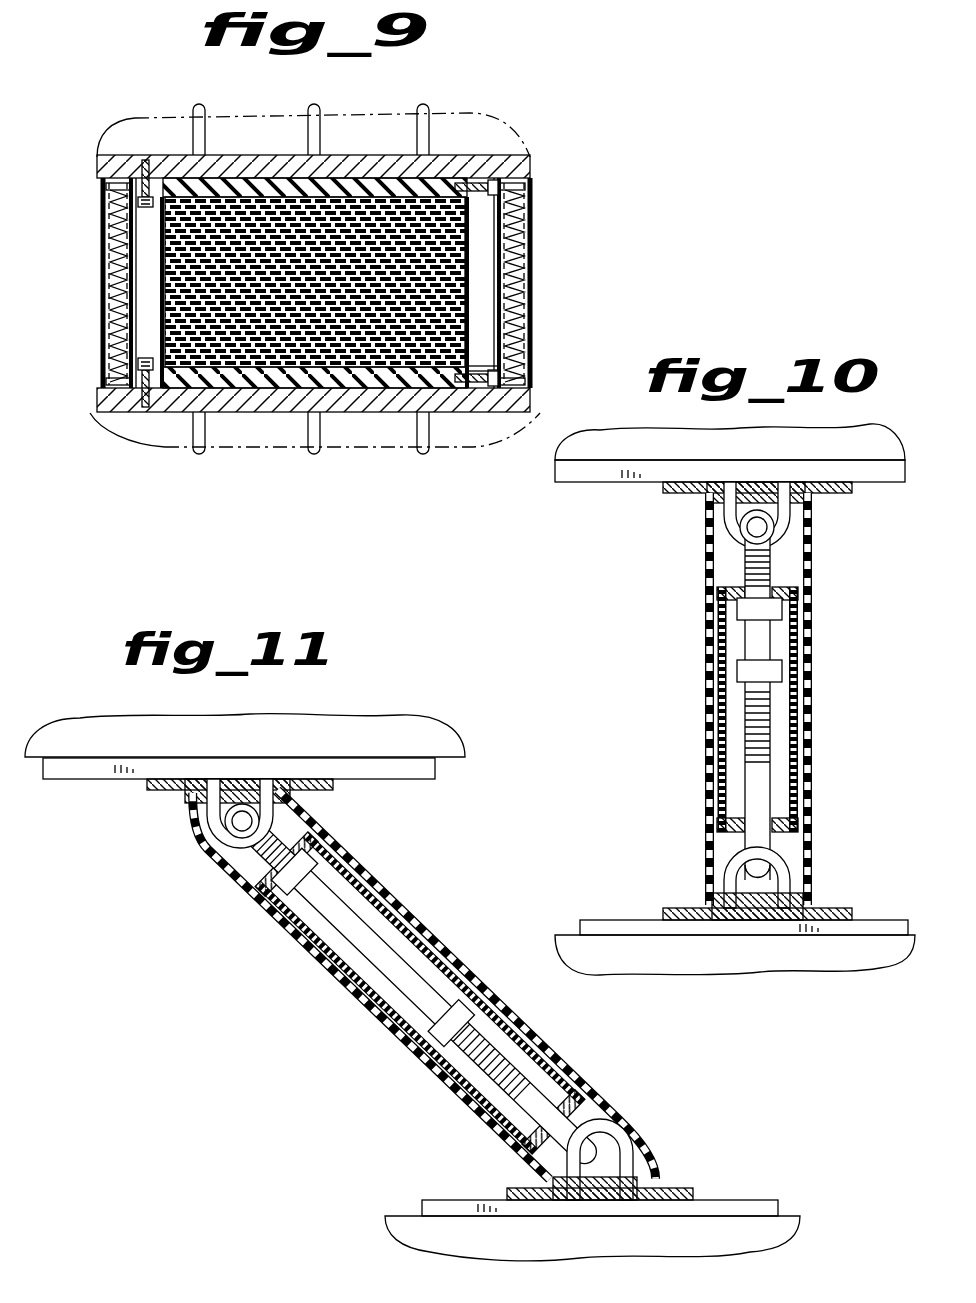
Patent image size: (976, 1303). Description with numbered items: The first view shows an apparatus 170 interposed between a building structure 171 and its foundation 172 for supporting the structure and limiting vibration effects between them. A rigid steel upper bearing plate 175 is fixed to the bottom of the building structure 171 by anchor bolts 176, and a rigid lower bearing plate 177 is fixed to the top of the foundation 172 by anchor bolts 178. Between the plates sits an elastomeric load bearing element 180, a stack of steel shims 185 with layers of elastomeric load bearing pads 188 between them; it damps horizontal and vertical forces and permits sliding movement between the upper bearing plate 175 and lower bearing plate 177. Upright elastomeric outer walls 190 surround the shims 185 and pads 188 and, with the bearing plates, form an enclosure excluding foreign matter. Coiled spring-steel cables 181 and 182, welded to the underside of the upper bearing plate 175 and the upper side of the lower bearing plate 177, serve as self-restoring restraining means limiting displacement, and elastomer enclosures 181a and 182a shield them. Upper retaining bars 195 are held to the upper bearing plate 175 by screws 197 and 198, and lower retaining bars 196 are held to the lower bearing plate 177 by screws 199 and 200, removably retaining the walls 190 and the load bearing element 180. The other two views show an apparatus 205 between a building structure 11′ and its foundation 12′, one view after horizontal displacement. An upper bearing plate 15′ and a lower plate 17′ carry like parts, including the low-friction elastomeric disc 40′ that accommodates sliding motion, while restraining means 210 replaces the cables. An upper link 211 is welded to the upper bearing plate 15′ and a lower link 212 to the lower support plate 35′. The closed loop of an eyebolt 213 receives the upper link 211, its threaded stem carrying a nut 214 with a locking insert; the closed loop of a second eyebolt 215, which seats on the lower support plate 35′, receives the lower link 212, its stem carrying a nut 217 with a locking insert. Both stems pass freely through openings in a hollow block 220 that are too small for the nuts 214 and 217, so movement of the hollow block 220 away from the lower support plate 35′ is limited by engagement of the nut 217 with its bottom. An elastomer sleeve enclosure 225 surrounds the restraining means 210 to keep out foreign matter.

In FIG. 9, the apparatus 170 is at (341, 287).
In FIG. 9, the building structure 171 is at (490, 108).
In FIG. 9, the foundation 172 is at (180, 447).
In FIG. 9, the upper bearing plate 175 is at (531, 170).
In FIG. 9, the anchor bolts 176 is at (205, 108).
In FIG. 9, the lower bearing plate 177 is at (100, 400).
In FIG. 9, the anchor bolts 178 is at (308, 452).
In FIG. 9, the elastomeric load bearing element 180 is at (476, 283).
In FIG. 9, the coiled cable 181 is at (103, 270).
In FIG. 9, the enclosure 181a is at (157, 298).
In FIG. 9, the coiled cable 182 is at (531, 246).
In FIG. 9, the enclosure 182a is at (531, 226).
In FIG. 9, the shims 185 is at (418, 200).
In FIG. 9, the elastomeric load bearing pads 188 is at (272, 235).
In FIG. 9, the outer walls 190 is at (160, 250).
In FIG. 9, the upper retaining bars 195 is at (103, 193).
In FIG. 9, the lower retaining bars 196 is at (104, 365).
In FIG. 9, the screws 197 is at (146, 160).
In FIG. 9, the screws 198 is at (488, 178).
In FIG. 9, the screws 199 is at (139, 412).
In FIG. 9, the screws 200 is at (531, 374).
In FIG. 10, the building structure 11′ is at (758, 448).
In FIG. 11, the building structure 11′ is at (283, 732).
In FIG. 10, the foundation 12′ is at (728, 962).
In FIG. 11, the foundation 12′ is at (410, 1243).
In FIG. 10, the upper bearing plate 15′ is at (843, 463).
In FIG. 11, the upper bearing plate 15′ is at (436, 766).
In FIG. 10, the lower plate 17′ is at (611, 923).
In FIG. 11, the lower plate 17′ is at (432, 1202).
In FIG. 10, the lower support plate 35′ is at (677, 907).
In FIG. 11, the lower support plate 35′ is at (680, 1188).
In FIG. 10, the elastomeric disc 40′ is at (665, 493).
In FIG. 11, the elastomeric disc 40′ is at (333, 787).
In FIG. 10, the apparatus 205 is at (740, 695).
In FIG. 11, the apparatus 205 is at (412, 990).
In FIG. 10, the restraining means 210 is at (760, 699).
In FIG. 11, the restraining means 210 is at (420, 990).
In FIG. 10, the upper link 211 is at (778, 520).
In FIG. 11, the upper link 211 is at (214, 818).
In FIG. 10, the lower link 212 is at (784, 876).
In FIG. 11, the lower link 212 is at (612, 1140).
In FIG. 10, the eyebolt 213 is at (760, 530).
In FIG. 11, the eyebolt 213 is at (228, 825).
In FIG. 10, the nut 214 is at (782, 603).
In FIG. 11, the nut 214 is at (294, 871).
In FIG. 10, the eyebolt 215 is at (760, 793).
In FIG. 11, the eyebolt 215 is at (418, 990).
In FIG. 10, the nut 217 is at (782, 663).
In FIG. 11, the nut 217 is at (451, 1023).
In FIG. 10, the hollow block 220 is at (798, 758).
In FIG. 11, the hollow block 220 is at (420, 993).
In FIG. 10, the enclosure 225 is at (700, 730).
In FIG. 11, the enclosure 225 is at (371, 986).